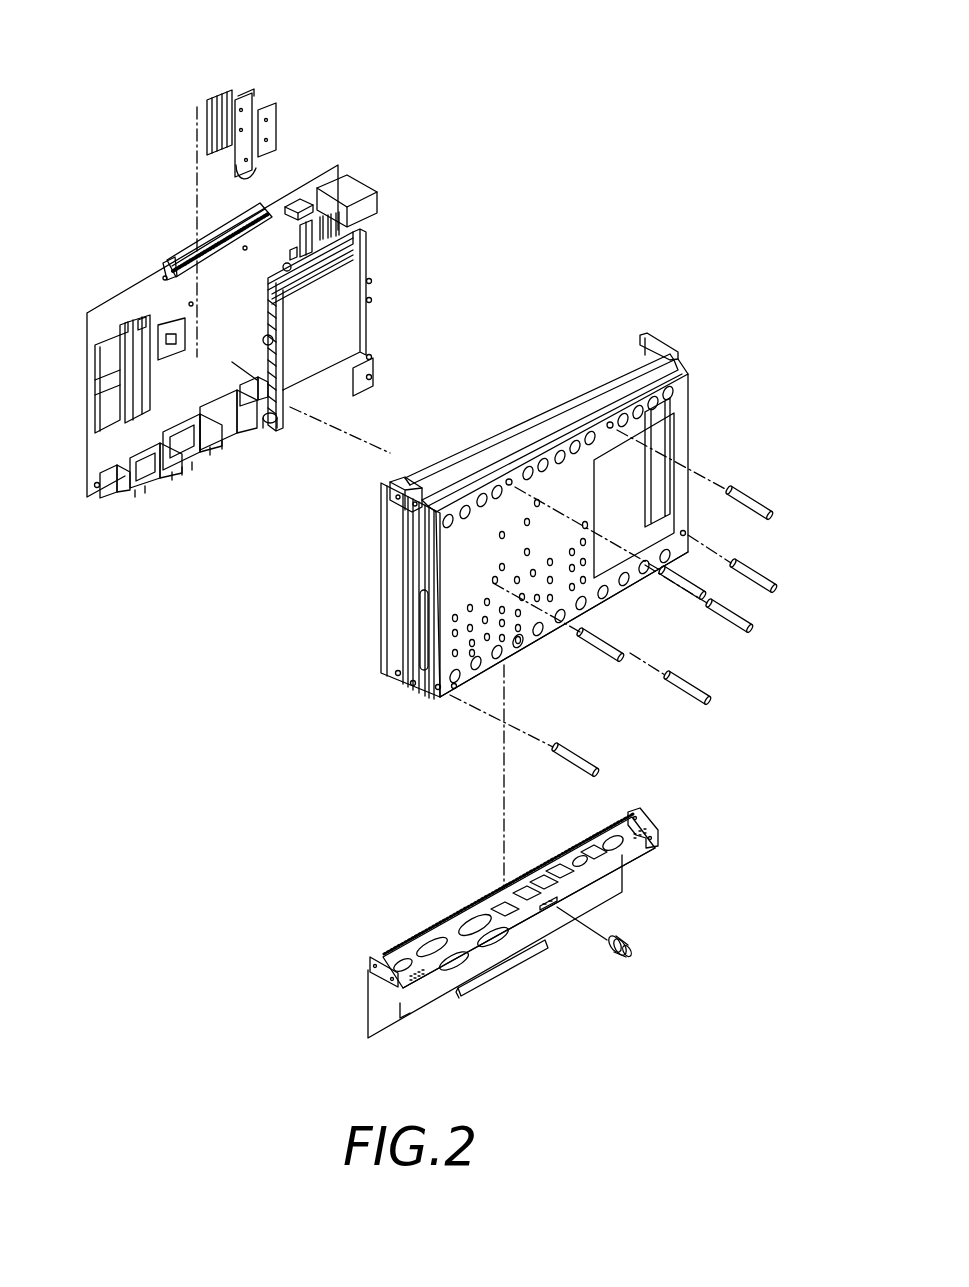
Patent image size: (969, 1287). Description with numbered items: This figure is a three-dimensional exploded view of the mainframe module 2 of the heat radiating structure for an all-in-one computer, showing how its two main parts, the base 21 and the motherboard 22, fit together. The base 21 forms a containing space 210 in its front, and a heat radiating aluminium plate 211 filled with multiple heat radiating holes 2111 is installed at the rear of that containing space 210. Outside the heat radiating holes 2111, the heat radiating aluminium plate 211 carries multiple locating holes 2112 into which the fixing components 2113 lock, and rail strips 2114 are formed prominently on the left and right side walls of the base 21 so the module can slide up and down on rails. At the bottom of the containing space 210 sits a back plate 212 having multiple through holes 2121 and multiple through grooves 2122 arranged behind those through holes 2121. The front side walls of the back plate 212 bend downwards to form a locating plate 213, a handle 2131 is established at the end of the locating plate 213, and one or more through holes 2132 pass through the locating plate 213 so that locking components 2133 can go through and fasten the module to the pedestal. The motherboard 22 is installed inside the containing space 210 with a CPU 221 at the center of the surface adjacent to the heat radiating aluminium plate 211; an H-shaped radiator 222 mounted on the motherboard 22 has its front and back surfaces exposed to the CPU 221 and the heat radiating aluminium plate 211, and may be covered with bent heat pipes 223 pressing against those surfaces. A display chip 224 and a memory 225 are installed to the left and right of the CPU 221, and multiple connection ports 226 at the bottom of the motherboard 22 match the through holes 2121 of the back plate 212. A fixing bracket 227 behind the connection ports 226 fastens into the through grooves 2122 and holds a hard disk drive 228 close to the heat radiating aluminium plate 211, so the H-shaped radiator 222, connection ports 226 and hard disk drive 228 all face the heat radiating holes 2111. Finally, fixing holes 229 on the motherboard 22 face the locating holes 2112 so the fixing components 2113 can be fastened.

The mainframe module 2 is at (301, 828).
The base 21 is at (668, 328).
The motherboard 22 is at (112, 318).
The containing space 210 is at (543, 398).
The heat radiating aluminium plate 211 is at (442, 694).
The back plate 212 is at (438, 967).
The locating plate 213 is at (370, 1013).
The CPU 221 is at (170, 332).
The H-shaped radiator 222 is at (242, 97).
The bent heat pipes 223 is at (258, 138).
The display chip 224 is at (307, 203).
The memory 225 is at (105, 378).
The connection ports 226 is at (170, 488).
The fixing bracket 227 is at (273, 310).
The hard disk drive 228 is at (348, 297).
The fixing holes 229 is at (237, 242).
The heat radiating holes 2111 is at (618, 425).
The locating holes 2112 is at (508, 478).
The fixing components 2113 is at (735, 497).
The rail strips 2114 is at (413, 576).
The through holes 2121 is at (503, 938).
The through grooves 2122 is at (658, 843).
The handle 2131 is at (473, 987).
The through holes 2132 is at (573, 898).
The locking components 2133 is at (630, 955).